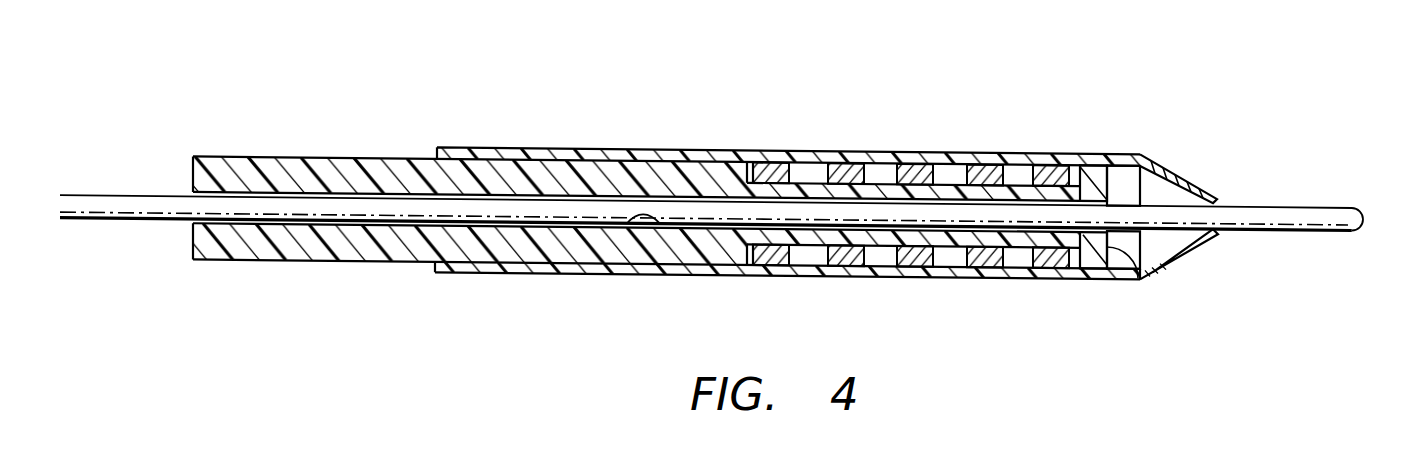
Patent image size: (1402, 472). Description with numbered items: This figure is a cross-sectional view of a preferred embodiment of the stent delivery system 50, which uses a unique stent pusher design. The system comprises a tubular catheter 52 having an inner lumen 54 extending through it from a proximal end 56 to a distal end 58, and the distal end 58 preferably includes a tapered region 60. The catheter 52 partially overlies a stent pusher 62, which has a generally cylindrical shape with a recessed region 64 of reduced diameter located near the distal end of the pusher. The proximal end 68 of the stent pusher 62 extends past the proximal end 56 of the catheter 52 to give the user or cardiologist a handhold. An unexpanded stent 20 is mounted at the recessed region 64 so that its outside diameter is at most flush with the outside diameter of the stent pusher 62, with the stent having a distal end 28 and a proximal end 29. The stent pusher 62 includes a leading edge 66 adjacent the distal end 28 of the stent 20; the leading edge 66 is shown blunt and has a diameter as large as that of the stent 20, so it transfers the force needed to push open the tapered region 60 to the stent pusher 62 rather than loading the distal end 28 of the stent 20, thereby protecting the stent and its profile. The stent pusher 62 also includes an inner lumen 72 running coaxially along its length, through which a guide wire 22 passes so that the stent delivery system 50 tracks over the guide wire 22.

The stent delivery system 50 is at (268, 117).
The tubular catheter 52 is at (533, 150).
The inner lumen 54 is at (545, 275).
The proximal end 56 is at (437, 277).
The distal end 58 is at (1217, 198).
The tapered region 60 is at (1177, 266).
The stent pusher 62 is at (663, 177).
The recessed region 64 is at (870, 240).
The leading edge 66 is at (1135, 281).
The proximal end 68 is at (195, 263).
The unexpanded stent 20 is at (837, 173).
The guide wire 22 is at (1277, 207).
The distal end 28 is at (1081, 265).
The proximal end 29 is at (748, 250).
The inner lumen 72 is at (662, 230).